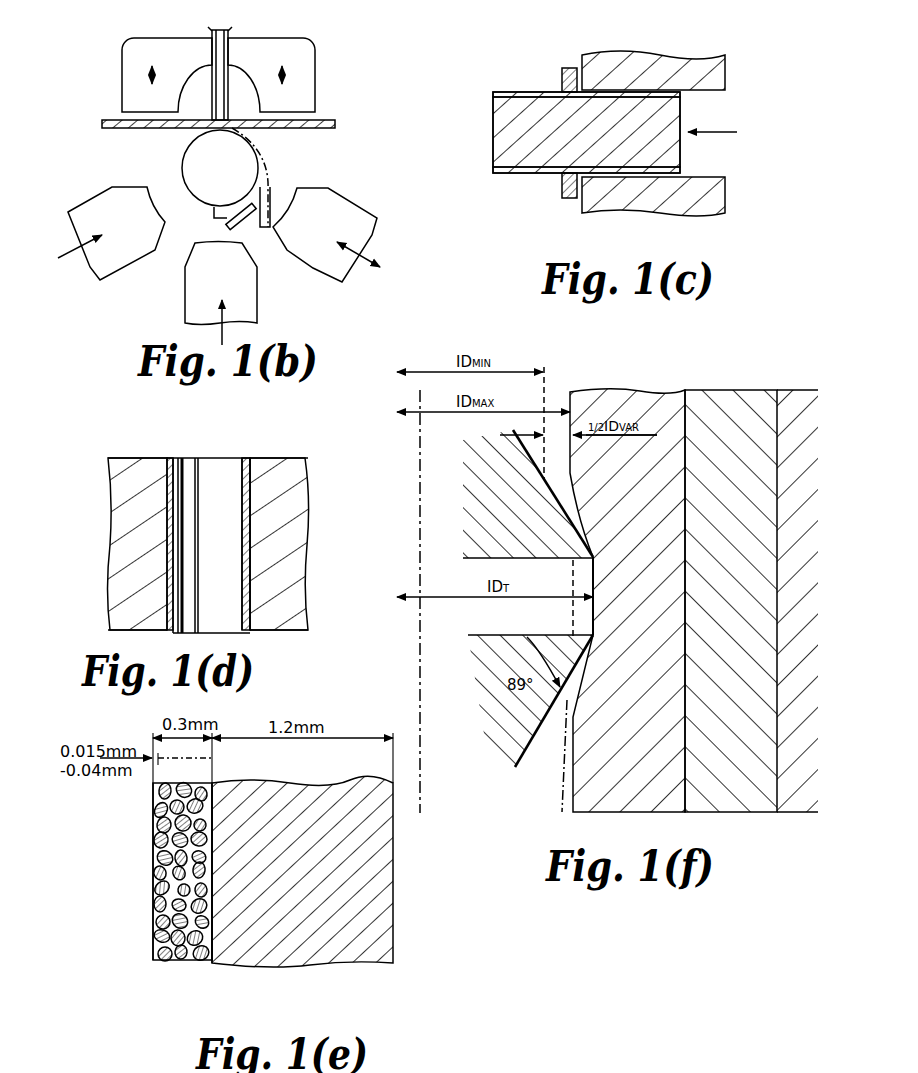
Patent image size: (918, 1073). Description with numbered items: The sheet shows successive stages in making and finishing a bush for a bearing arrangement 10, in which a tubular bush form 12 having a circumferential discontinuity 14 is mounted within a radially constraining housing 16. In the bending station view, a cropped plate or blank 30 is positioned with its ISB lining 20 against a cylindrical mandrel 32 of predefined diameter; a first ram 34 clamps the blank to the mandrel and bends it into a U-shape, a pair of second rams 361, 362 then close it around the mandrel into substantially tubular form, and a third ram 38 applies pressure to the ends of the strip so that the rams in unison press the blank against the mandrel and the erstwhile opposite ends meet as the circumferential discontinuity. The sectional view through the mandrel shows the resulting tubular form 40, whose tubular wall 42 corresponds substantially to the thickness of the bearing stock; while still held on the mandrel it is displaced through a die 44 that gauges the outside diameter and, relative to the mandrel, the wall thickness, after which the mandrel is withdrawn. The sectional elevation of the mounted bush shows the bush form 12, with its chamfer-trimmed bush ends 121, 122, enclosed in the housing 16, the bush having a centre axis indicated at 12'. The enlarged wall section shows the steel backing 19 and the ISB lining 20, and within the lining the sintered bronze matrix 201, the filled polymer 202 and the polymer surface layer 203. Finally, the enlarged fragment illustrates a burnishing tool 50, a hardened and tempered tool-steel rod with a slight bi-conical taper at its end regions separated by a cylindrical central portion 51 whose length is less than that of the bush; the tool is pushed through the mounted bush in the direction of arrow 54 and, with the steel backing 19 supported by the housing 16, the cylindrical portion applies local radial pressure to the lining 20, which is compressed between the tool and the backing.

In FIG. 1D, the bearing arrangement 10 is at (312, 530).
In FIG. 1D, the tubular bush form 12 is at (218, 520).
In FIG. 1F, the center axis of tube 12' is at (386, 601).
In FIG. 1D, the bush end 121 is at (247, 632).
In FIG. 1D, the bush end 122 is at (250, 458).
In FIG. 1D, the circumferential discontinuity 14 is at (200, 470).
In FIG. 1D, the radially constraining housing 16 is at (136, 458).
In FIG. 1F, the radially constraining housing 16 is at (794, 405).
In FIG. 1E, the steel backing 19 is at (353, 953).
In FIG. 1F, the steel backing 19 is at (727, 393).
In FIG. 1B, the ISB lining 20 is at (311, 129).
In FIG. 1E, the ISB lining 20 is at (170, 967).
In FIG. 1F, the ISB lining 20 is at (647, 392).
In FIG. 1E, the sintered bronze matrix 201 is at (213, 930).
In FIG. 1E, the filled polymer 202 is at (203, 963).
In FIG. 1E, the polymer surface layer 203 is at (153, 913).
In FIG. 1B, the blank 30 is at (322, 110).
In FIG. 1B, the cylindrical mandrel 32 is at (183, 156).
In FIG. 1C, the cylindrical mandrel 32 is at (505, 124).
In FIG. 1B, the first ram 34 is at (323, 53).
In FIG. 1C, the first ram 34 is at (657, 55).
In FIG. 1B, the second ram 361 is at (349, 203).
In FIG. 1B, the second ram 362 is at (97, 190).
In FIG. 1B, the third ram 38 is at (245, 287).
In FIG. 1C, the third ram 38 is at (657, 200).
In FIG. 1C, the tubular form 40 is at (497, 90).
In FIG. 1C, the tubular wall 42 is at (514, 92).
In FIG. 1E, the tubular wall 42 is at (328, 813).
In FIG. 1C, the die 44 is at (565, 75).
In FIG. 1F, the burnishing tool 50 is at (567, 529).
In FIG. 1F, the cylindrical central portion 51 is at (553, 613).
In FIG. 1F, the arrow 54 is at (475, 680).